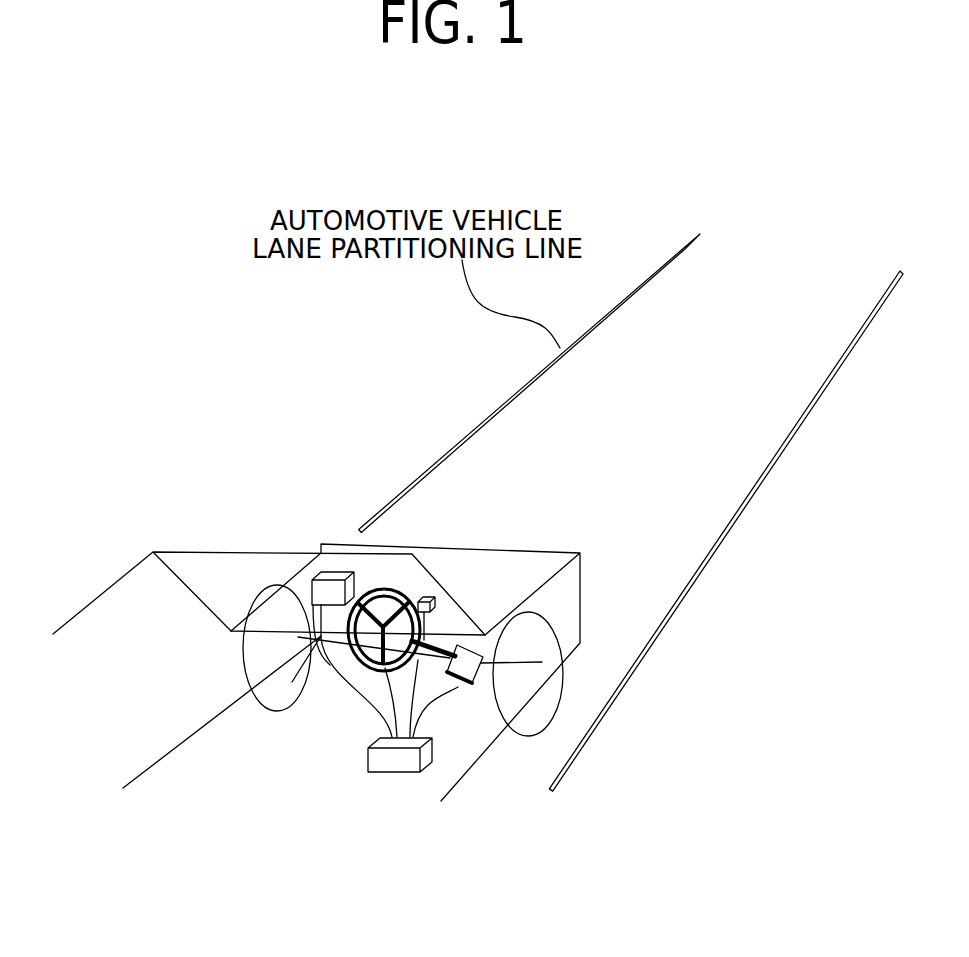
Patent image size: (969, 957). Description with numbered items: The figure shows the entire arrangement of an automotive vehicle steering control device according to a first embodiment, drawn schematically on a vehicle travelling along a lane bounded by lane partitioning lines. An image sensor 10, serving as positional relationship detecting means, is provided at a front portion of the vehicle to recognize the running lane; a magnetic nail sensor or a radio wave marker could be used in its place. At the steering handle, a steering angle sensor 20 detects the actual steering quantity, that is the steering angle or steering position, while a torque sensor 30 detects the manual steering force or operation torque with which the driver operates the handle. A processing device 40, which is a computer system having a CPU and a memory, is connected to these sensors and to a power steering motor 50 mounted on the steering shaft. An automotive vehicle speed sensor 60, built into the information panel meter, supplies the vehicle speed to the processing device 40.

The image sensor 10 is at (313, 578).
The steering angle sensor 20 is at (425, 578).
The torque sensor 30 is at (398, 632).
The processing device 40 is at (368, 760).
The power steering motor 50 is at (456, 683).
The automotive vehicle speed sensor 60 is at (428, 597).